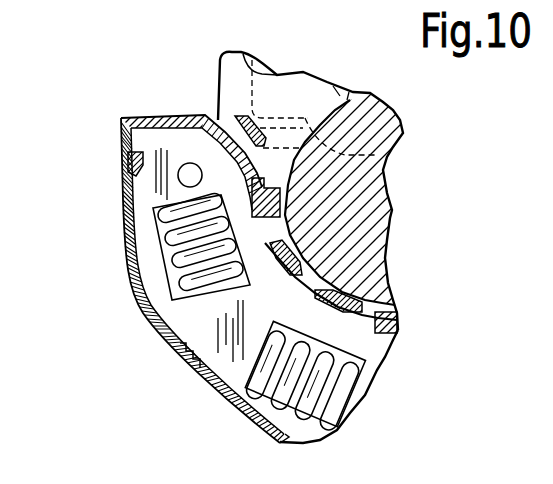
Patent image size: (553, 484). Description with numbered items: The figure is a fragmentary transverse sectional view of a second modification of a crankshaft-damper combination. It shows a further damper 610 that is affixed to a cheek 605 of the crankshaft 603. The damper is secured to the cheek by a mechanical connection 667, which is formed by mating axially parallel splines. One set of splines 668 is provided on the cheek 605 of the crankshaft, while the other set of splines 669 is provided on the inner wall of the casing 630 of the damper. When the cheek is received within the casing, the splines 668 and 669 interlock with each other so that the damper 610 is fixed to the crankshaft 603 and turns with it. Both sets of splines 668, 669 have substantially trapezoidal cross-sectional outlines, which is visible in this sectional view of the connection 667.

The crankshaft 603 is at (358, 192).
The cheek 605 is at (320, 276).
The damper 610 is at (152, 348).
The casing 630 is at (383, 337).
The mechanical connection 667 is at (126, 163).
The splines 668 is at (318, 293).
The splines 669 is at (352, 297).